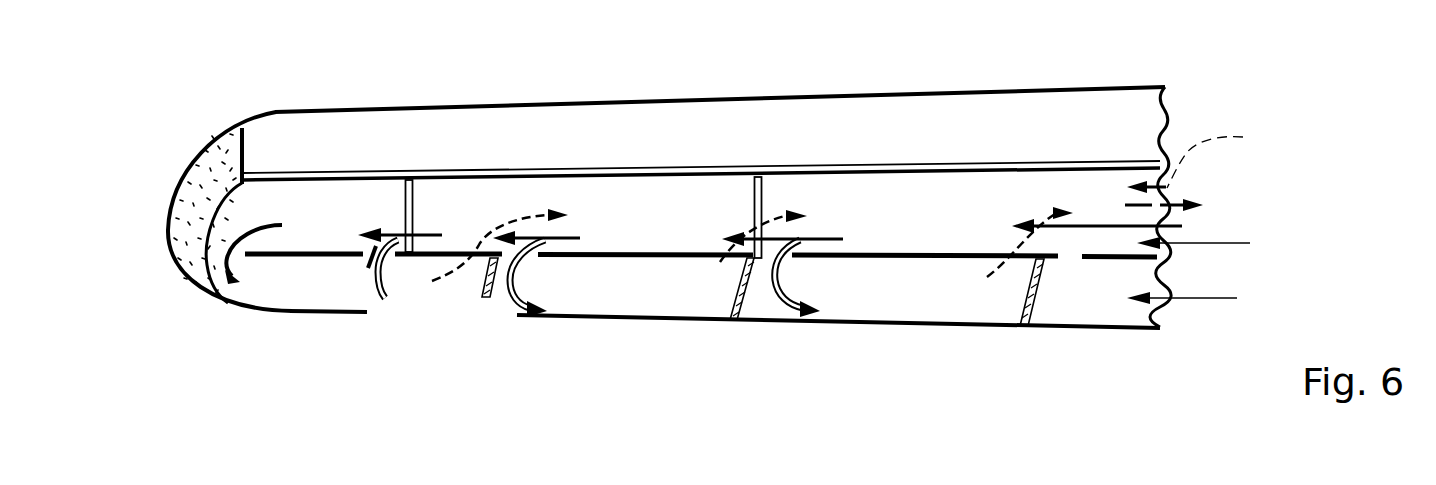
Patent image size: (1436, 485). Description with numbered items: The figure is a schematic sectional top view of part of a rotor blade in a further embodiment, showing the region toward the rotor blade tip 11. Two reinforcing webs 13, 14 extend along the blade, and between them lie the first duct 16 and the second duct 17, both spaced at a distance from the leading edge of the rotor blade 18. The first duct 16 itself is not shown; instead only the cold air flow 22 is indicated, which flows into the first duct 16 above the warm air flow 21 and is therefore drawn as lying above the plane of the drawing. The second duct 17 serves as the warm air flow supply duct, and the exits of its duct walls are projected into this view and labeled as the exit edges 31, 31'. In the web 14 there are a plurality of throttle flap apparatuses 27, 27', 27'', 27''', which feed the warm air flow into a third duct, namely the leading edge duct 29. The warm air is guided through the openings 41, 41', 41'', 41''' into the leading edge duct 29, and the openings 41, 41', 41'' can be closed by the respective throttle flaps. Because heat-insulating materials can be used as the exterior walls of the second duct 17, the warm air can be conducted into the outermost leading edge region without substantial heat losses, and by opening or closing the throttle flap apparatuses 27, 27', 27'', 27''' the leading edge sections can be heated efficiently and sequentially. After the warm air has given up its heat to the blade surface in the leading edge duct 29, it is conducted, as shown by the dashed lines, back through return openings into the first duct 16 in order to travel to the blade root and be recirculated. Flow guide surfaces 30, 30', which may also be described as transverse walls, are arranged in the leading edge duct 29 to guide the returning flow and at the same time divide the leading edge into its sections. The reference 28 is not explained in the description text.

The rotor blade tip 11 is at (174, 236).
The web 13 is at (933, 167).
The web 14 is at (940, 259).
The first duct 16 is at (1223, 156).
The second duct 17 is at (1209, 244).
The leading edge of the rotor blade 18 is at (668, 320).
The warm air flow 21 is at (1180, 225).
The cold air flow 22 is at (1173, 204).
The throttle flap apparatus 27 is at (1100, 326).
The throttle flap apparatus 27' is at (800, 315).
The throttle flap apparatus 27'' is at (515, 311).
The throttle flap apparatus 27''' is at (346, 311).
The outer skin 28 is at (702, 98).
The leading edge duct 29 is at (1198, 300).
The flow guide surface 30 is at (1003, 326).
The flow guide surface 30' is at (720, 324).
The exit edge 31 is at (447, 151).
The exit edge 31' is at (787, 149).
The opening 41 is at (781, 301).
The opening 41' is at (516, 165).
The opening 41'' is at (394, 147).
The opening 41''' is at (288, 167).